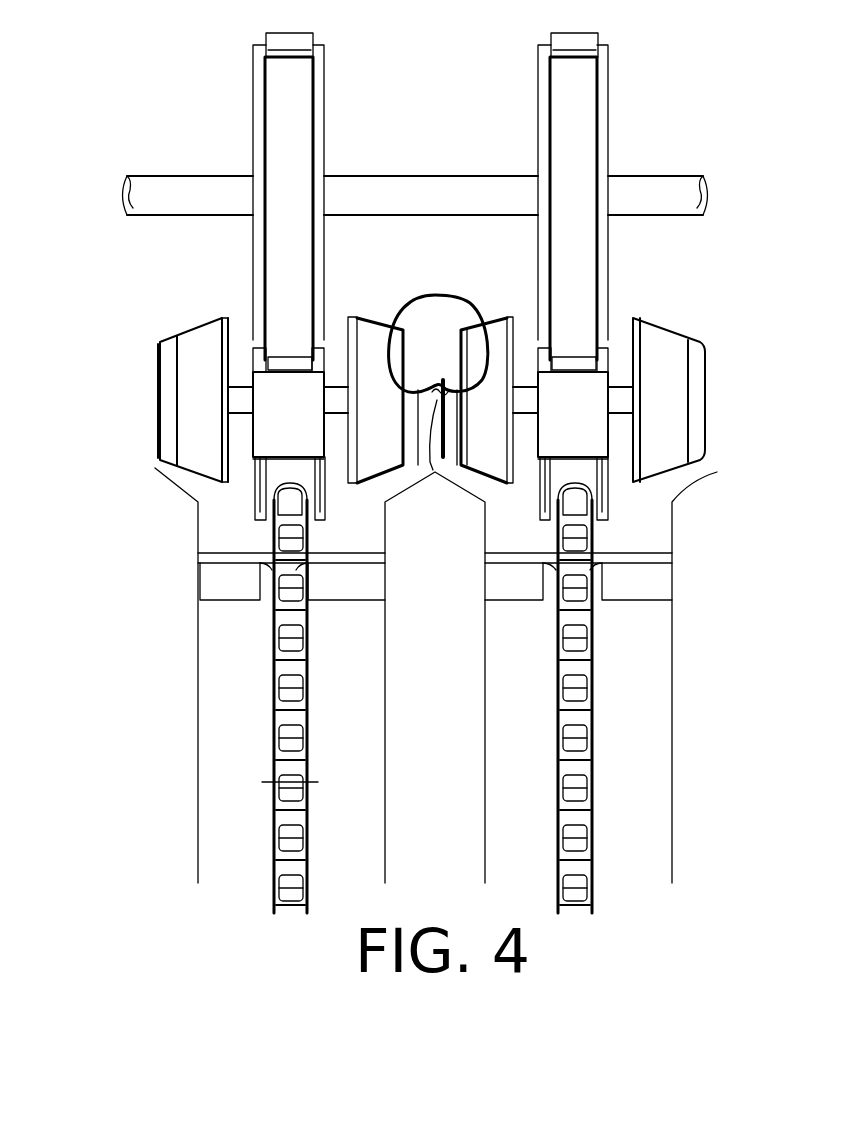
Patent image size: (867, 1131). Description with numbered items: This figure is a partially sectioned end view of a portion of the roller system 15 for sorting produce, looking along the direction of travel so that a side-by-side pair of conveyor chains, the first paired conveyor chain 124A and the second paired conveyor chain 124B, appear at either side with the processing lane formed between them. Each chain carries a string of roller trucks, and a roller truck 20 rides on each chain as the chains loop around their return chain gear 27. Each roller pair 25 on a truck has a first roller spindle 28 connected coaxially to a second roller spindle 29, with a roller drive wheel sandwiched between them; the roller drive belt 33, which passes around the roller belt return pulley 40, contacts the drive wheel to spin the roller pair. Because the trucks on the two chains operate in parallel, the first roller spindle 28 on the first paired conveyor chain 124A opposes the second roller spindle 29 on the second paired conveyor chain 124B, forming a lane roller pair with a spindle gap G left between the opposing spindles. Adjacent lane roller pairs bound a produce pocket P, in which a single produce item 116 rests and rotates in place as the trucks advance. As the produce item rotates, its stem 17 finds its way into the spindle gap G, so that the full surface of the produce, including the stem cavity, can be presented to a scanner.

The roller system 15 is at (168, 113).
The roller drive belt 33 is at (283, 42).
The roller belt return pulley 40 is at (320, 103).
The produce pocket P is at (418, 288).
The roller pair 25 is at (198, 335).
The first roller spindle 28 is at (170, 395).
The second roller spindle 29 is at (365, 365).
The single produce item 116 is at (420, 315).
The roller truck 20 is at (265, 450).
The first paired conveyor chain 124A is at (268, 492).
The second paired conveyor chain 124B is at (590, 502).
The spindle gap G is at (440, 420).
The stem 17 is at (437, 400).
The return chain gear 27 is at (272, 830).